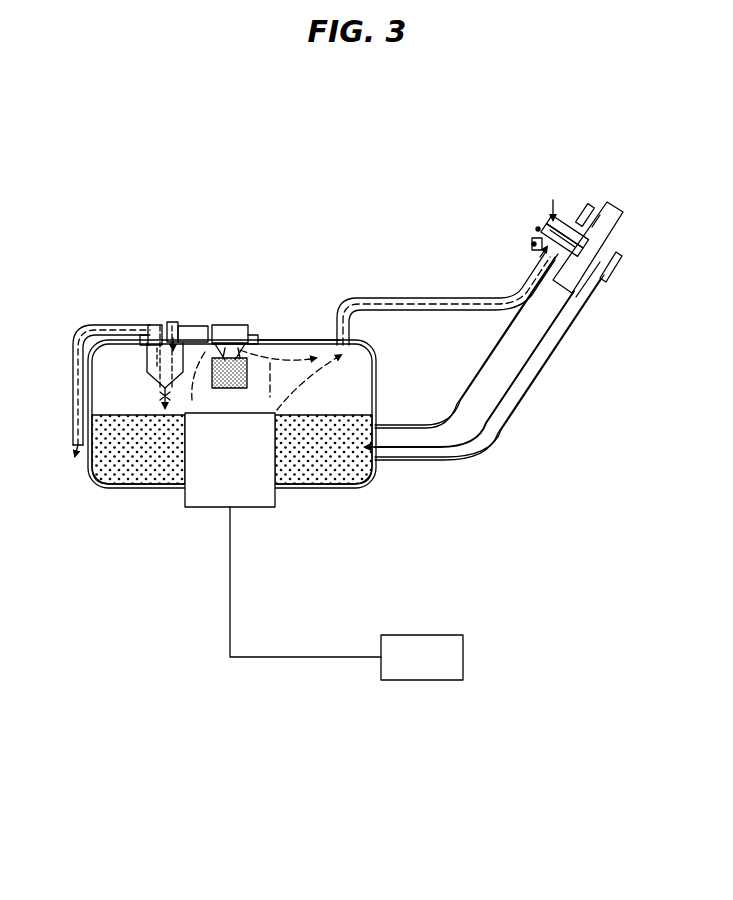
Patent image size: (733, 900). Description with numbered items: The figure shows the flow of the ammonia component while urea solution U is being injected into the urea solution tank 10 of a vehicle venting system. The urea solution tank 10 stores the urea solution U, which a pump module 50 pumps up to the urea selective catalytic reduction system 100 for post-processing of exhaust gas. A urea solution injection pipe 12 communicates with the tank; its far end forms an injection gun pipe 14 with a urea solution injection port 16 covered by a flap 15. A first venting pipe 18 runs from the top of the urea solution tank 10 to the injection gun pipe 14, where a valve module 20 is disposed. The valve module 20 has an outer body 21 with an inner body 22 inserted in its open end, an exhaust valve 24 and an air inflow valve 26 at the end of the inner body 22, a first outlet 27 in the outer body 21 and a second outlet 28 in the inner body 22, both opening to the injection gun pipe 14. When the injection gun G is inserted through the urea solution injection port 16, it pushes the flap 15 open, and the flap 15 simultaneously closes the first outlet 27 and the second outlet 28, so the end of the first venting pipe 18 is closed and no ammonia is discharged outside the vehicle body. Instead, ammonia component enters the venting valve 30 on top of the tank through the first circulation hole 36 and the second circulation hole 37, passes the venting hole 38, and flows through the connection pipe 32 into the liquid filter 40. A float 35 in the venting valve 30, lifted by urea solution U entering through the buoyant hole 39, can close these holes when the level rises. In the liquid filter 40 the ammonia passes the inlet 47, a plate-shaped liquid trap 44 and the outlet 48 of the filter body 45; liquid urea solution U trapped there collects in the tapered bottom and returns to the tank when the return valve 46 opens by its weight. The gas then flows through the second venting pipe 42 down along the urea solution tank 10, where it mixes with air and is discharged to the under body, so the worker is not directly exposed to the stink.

The urea solution tank 10 is at (258, 340).
The urea solution injection pipe 12 is at (540, 352).
The injection gun pipe 14 is at (600, 286).
The flap 15 is at (600, 263).
The urea solution injection port 16 is at (614, 250).
The first venting pipe 18 is at (418, 298).
The valve module 20 is at (553, 200).
The outer body 21 is at (562, 228).
The inner body 22 is at (568, 232).
The exhaust valve 24 is at (538, 228).
The air inflow valve 26 is at (532, 240).
The first outlet 27 is at (580, 232).
The second outlet 28 is at (586, 214).
The venting valve 30 is at (257, 283).
The connection pipe 32 is at (185, 326).
The float 35 is at (278, 333).
The first circulation hole 36 is at (206, 326).
The second circulation hole 37 is at (256, 334).
The venting hole 38 is at (222, 330).
The buoyant hole 39 is at (232, 390).
The liquid filter 40 is at (133, 281).
The second venting pipe 42 is at (72, 337).
The liquid trap 44 is at (148, 332).
The filter body 45 is at (148, 370).
The return valve 46 is at (160, 395).
The inlet 47 is at (172, 322).
The outlet 48 is at (152, 326).
The pump module 50 is at (216, 496).
The UREA-SCR system 100 is at (424, 681).
The urea solution U is at (323, 488).
The injection gun G is at (600, 215).